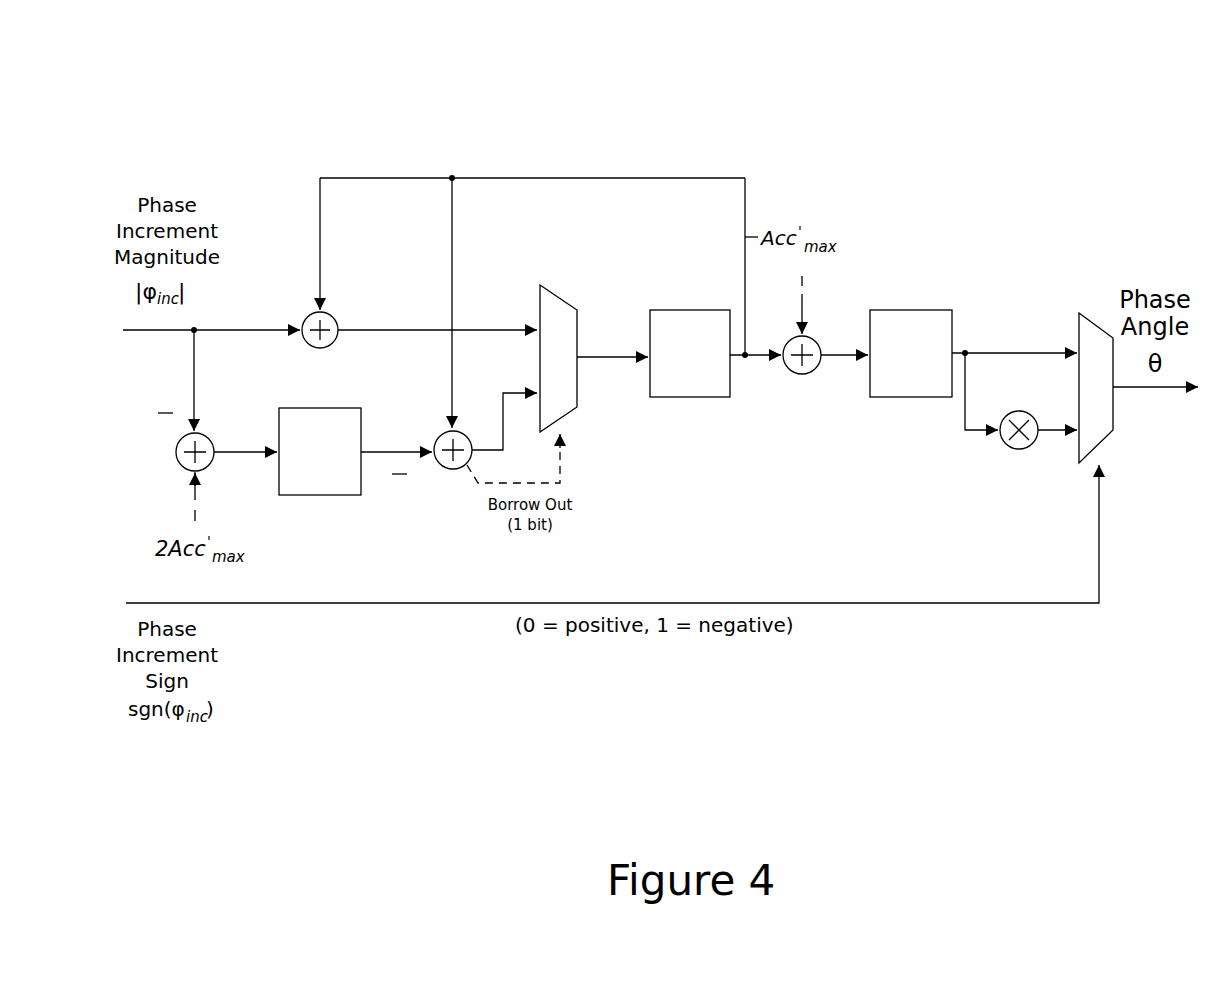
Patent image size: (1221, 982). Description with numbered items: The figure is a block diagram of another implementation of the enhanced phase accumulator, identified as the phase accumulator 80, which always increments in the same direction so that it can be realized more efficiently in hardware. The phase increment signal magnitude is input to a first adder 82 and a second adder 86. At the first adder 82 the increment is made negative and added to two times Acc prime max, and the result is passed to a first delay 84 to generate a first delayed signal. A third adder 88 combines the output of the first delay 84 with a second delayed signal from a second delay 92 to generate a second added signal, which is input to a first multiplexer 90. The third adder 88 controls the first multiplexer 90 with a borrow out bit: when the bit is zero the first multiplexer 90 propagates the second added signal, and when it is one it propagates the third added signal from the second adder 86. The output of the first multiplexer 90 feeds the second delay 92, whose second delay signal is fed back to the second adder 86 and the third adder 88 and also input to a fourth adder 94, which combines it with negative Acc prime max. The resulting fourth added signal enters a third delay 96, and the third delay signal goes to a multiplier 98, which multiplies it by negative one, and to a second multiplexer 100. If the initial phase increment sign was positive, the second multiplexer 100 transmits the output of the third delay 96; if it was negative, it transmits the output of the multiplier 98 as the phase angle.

The phase accumulator 80 is at (1110, 152).
The first adder 82 is at (176, 452).
The first delay 84 is at (332, 496).
The second adder 86 is at (313, 320).
The third adder 88 is at (446, 470).
The first multiplexer 90 is at (558, 296).
The second delay 92 is at (688, 398).
The fourth adder 94 is at (814, 373).
The third delay 96 is at (913, 398).
The multiplier 98 is at (1012, 410).
The second multiplexer 100 is at (1114, 430).